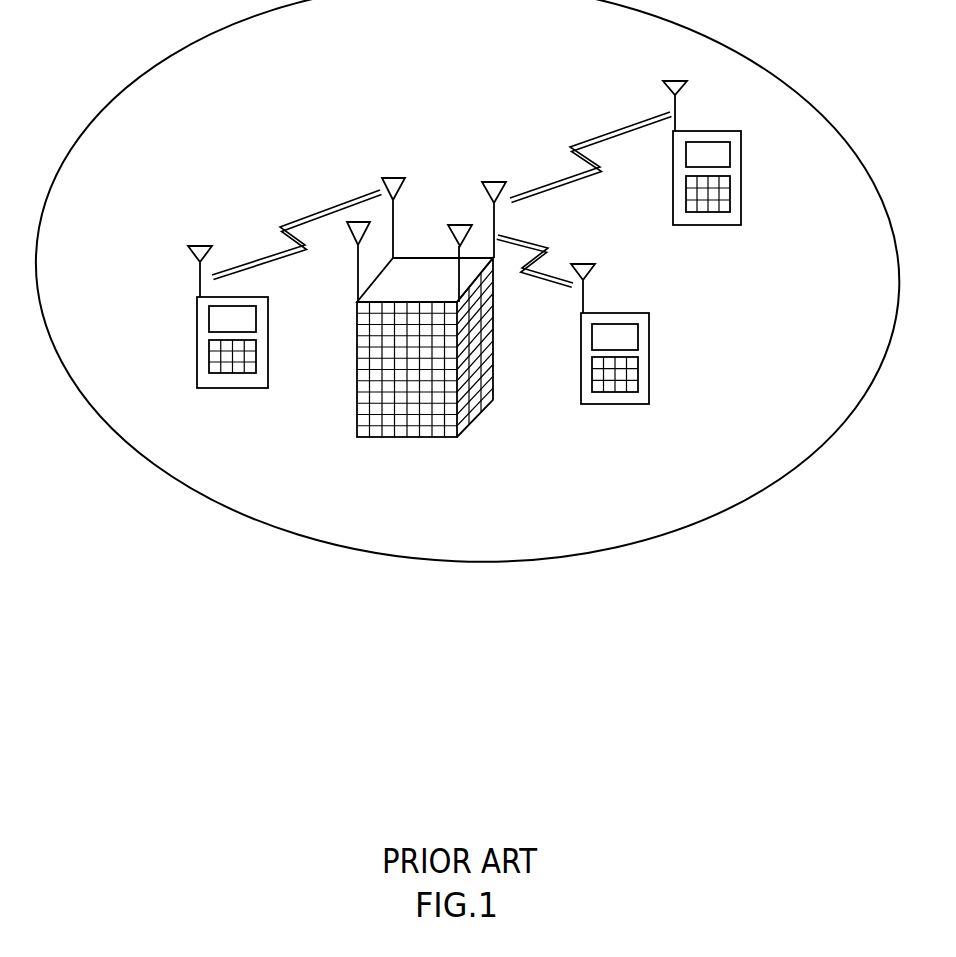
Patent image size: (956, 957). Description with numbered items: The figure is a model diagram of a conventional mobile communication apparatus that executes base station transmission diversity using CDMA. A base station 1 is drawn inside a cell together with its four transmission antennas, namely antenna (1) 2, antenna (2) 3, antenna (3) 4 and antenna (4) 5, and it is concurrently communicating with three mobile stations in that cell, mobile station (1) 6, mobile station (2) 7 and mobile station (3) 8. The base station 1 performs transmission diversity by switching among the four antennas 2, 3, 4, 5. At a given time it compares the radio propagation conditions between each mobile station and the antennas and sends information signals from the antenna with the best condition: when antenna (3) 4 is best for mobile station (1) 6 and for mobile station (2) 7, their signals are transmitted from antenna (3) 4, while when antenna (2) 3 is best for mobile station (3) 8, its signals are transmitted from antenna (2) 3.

The base station 1 is at (358, 438).
The antenna (1) 2 is at (348, 222).
The antenna (2) 3 is at (392, 178).
The antenna (3) 4 is at (492, 181).
The antenna (4) 5 is at (460, 224).
The mobile station (1) 6 is at (587, 405).
The mobile station (2) 7 is at (683, 223).
The mobile station (3) 8 is at (193, 345).